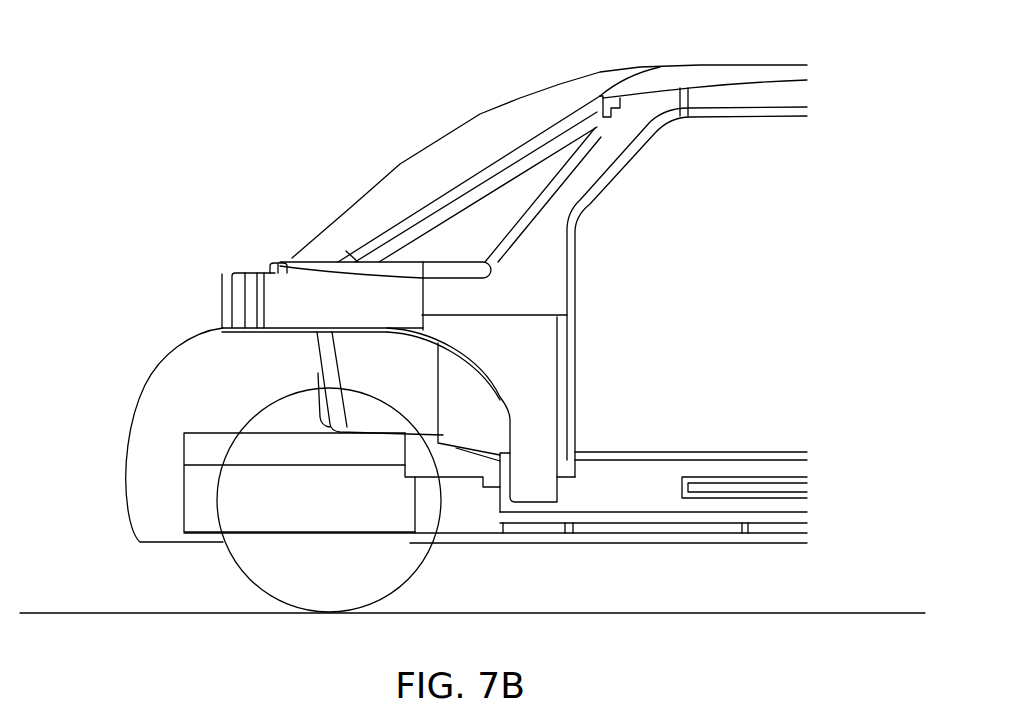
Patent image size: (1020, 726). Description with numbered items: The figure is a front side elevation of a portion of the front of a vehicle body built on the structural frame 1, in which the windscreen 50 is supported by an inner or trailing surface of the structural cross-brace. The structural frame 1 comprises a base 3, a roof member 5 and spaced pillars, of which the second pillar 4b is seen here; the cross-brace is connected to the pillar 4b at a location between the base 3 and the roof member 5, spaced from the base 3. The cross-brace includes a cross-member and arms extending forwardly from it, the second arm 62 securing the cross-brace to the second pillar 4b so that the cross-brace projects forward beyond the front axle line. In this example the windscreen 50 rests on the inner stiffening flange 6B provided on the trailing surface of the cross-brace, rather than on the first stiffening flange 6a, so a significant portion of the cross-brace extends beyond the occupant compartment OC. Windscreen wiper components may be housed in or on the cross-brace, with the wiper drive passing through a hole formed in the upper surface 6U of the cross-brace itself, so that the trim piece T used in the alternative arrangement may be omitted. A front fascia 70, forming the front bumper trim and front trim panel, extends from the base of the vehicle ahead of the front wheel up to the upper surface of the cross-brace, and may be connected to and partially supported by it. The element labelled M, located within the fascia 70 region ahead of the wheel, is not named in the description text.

The structural frame 1 is at (622, 322).
The base 3 is at (685, 416).
The roof member 5 is at (566, 92).
The windscreen 50 is at (400, 163).
The second arm 62 is at (353, 316).
The upper surface of the cross-brace 6U is at (247, 282).
The inner stiffening flange 6B is at (297, 256).
The first stiffening flange 6a is at (212, 271).
The trim piece T is at (268, 264).
The second pillar 4b is at (545, 304).
The occupant compartment OC is at (707, 204).
The motor unit M is at (197, 412).
The front fascia 70 is at (130, 407).